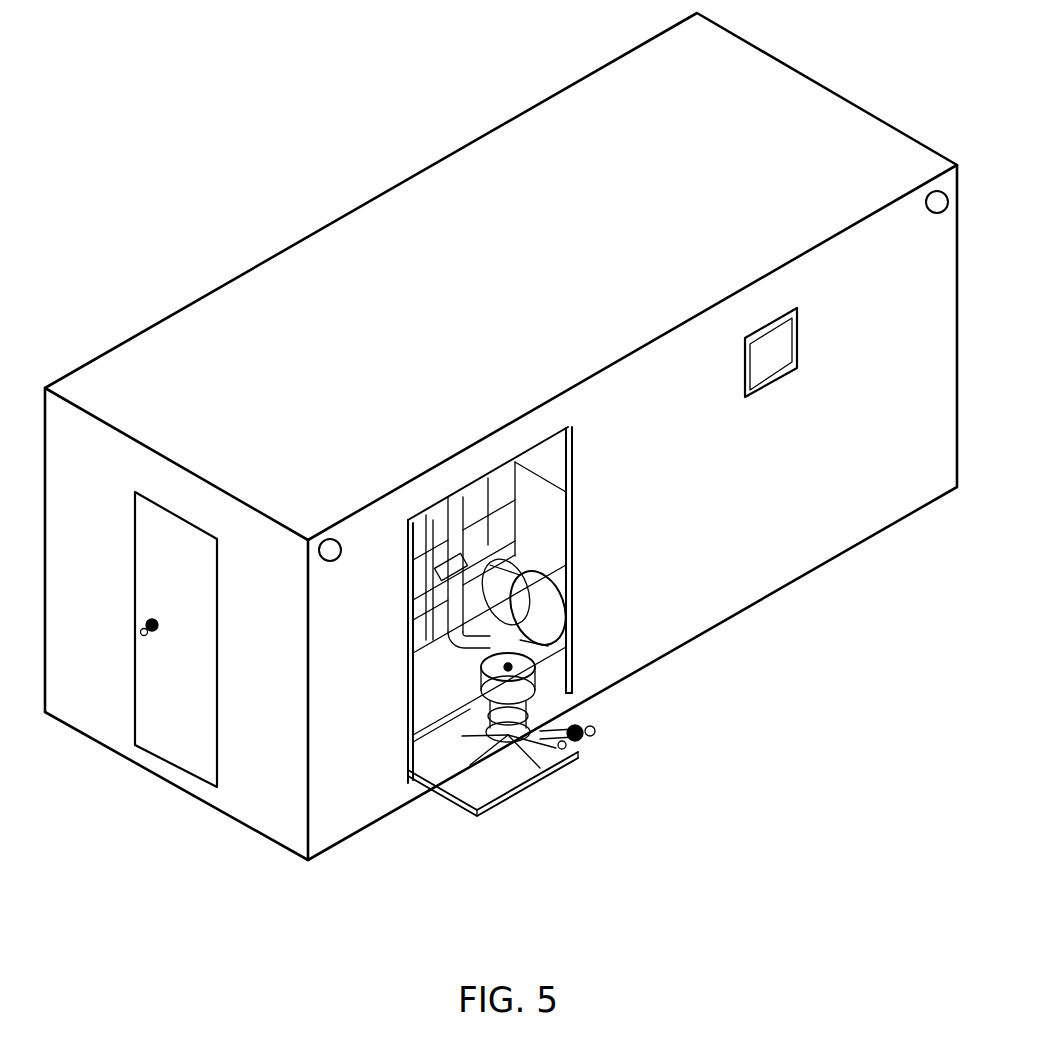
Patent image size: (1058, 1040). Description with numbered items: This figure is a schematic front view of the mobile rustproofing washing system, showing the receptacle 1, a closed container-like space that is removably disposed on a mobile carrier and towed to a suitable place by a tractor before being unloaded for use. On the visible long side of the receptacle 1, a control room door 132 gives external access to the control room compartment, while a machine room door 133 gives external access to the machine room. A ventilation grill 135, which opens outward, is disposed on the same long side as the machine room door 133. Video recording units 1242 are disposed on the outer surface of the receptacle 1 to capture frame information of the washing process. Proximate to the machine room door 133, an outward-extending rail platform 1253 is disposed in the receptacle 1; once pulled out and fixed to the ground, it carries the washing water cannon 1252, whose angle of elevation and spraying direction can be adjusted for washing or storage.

The receptacle 1 is at (225, 282).
The control room door 132 is at (168, 735).
The video recording unit 1242 is at (330, 562).
The ventilation grill 135 is at (774, 357).
The machine room door 133 is at (575, 552).
The washing water cannon 1252 is at (596, 733).
The outward-extending rail platform 1253 is at (478, 790).